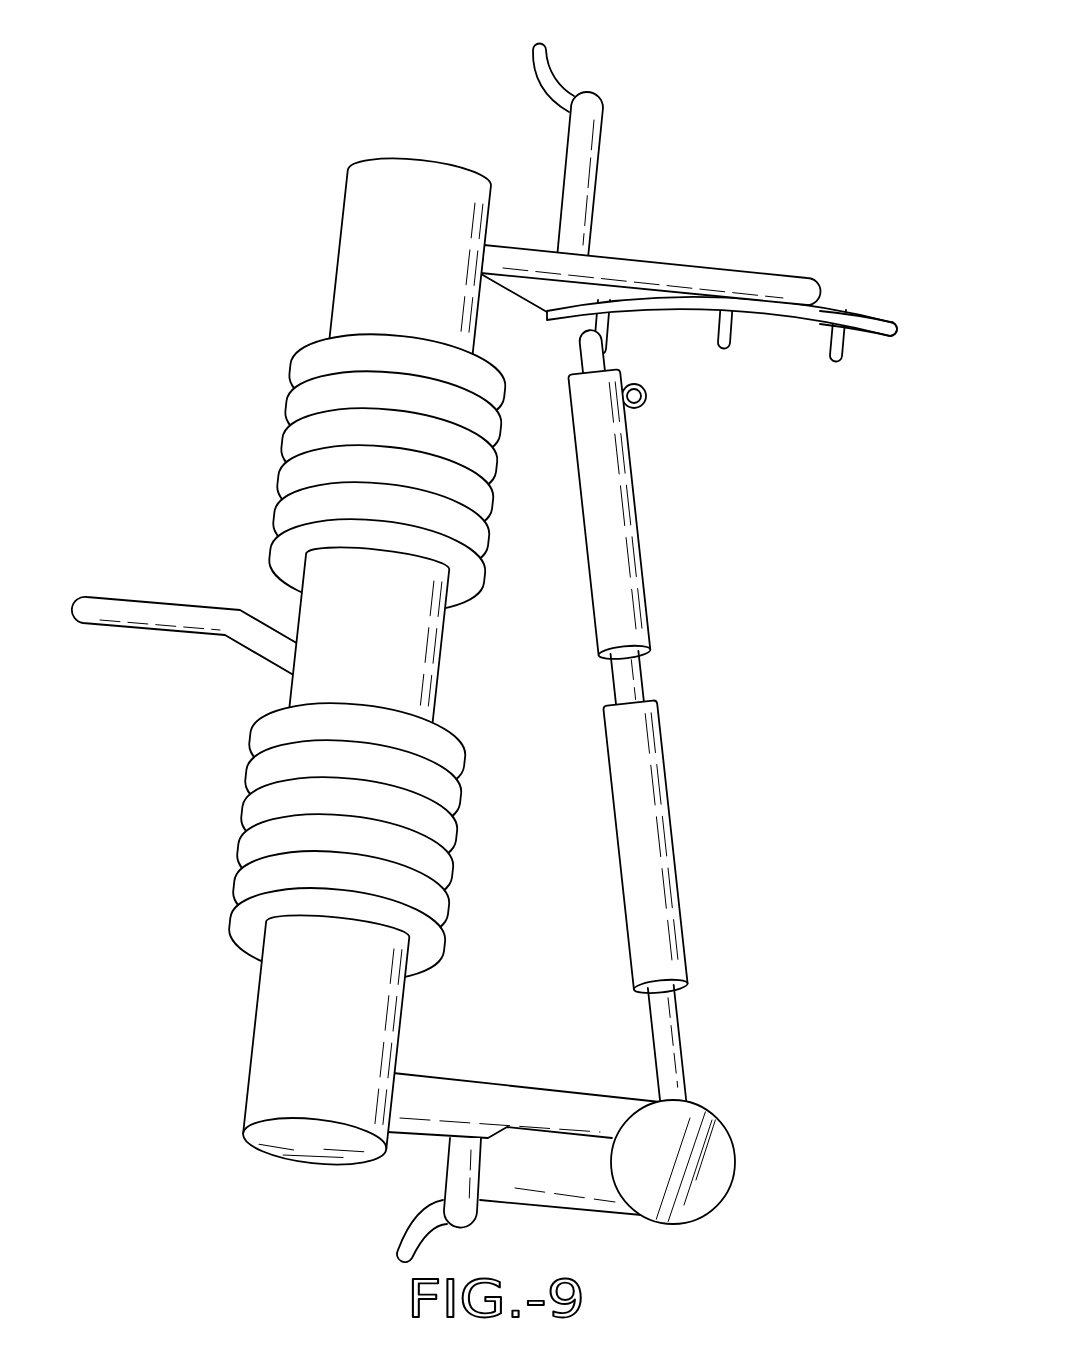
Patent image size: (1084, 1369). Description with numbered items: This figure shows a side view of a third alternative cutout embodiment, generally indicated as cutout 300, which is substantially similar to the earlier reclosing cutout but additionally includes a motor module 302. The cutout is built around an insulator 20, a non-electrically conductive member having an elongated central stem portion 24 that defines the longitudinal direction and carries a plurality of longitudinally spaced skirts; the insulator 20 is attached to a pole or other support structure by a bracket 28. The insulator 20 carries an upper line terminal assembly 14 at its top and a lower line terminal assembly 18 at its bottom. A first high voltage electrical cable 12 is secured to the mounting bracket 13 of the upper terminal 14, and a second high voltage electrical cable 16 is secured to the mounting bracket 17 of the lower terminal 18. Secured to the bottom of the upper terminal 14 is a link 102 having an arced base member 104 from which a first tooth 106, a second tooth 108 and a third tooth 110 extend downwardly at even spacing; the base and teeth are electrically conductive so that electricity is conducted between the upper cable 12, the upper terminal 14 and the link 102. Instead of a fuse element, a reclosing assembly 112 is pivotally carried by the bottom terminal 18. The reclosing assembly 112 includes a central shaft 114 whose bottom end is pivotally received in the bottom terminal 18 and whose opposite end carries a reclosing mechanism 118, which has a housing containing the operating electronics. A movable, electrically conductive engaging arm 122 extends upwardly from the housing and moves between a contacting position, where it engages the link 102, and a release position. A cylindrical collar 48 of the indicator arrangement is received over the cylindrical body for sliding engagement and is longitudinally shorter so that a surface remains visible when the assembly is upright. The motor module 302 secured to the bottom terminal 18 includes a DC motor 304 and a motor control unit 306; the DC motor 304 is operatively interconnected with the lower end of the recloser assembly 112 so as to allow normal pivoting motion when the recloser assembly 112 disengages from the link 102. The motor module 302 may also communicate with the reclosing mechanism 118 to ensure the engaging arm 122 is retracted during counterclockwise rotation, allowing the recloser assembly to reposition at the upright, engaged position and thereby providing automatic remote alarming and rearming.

The cutout 300 is at (208, 128).
The first high voltage power line or electrical cable 12 is at (530, 50).
The mounting bracket 13 is at (592, 128).
The upper line terminal assembly 14 is at (690, 260).
The link 102 is at (709, 329).
The arced base member 104 is at (841, 318).
The first tooth 106 is at (611, 322).
The second tooth 108 is at (733, 339).
The third tooth 110 is at (843, 353).
The engaging arm 122 is at (580, 352).
The reclosing mechanism 118 is at (652, 547).
The reclosing assembly 112 is at (668, 674).
The cylindrical collar 48 is at (664, 835).
The central shaft 114 is at (681, 1087).
The motor module 302 is at (730, 1194).
The DC motor 304 is at (722, 1163).
The motor control unit 306 is at (591, 1205).
The lower line terminal assembly 18 is at (512, 1076).
The mounting bracket 17 is at (463, 1217).
The second high voltage power line or electrical cable 16 is at (399, 1252).
The insulator 20 is at (376, 661).
The central stem portion 24 is at (378, 641).
The bracket 28 is at (122, 610).